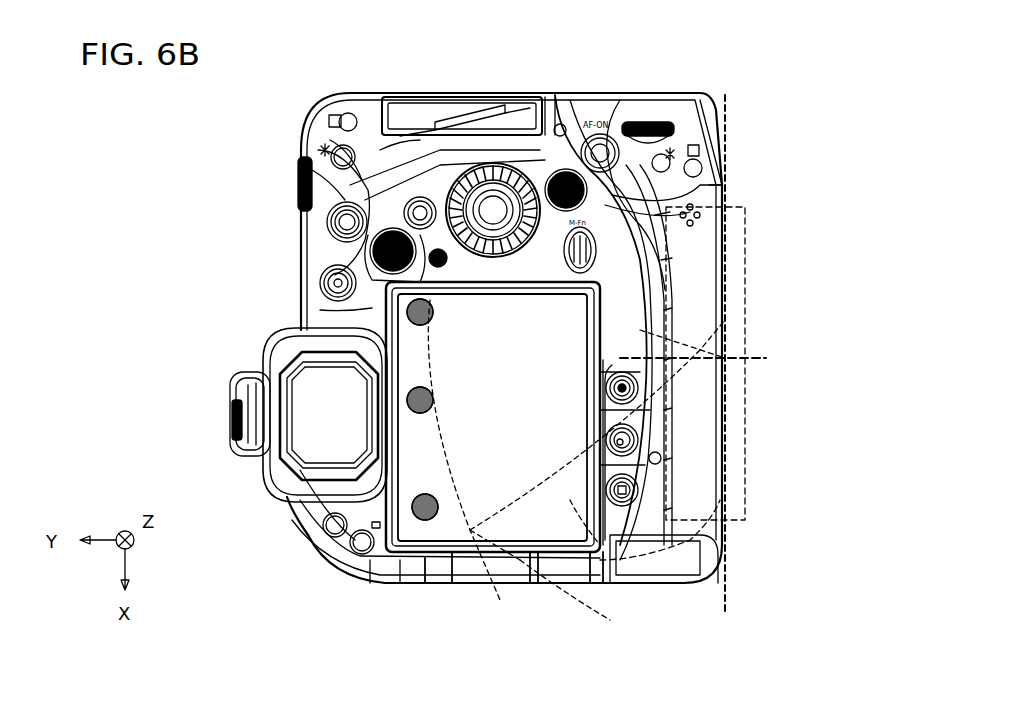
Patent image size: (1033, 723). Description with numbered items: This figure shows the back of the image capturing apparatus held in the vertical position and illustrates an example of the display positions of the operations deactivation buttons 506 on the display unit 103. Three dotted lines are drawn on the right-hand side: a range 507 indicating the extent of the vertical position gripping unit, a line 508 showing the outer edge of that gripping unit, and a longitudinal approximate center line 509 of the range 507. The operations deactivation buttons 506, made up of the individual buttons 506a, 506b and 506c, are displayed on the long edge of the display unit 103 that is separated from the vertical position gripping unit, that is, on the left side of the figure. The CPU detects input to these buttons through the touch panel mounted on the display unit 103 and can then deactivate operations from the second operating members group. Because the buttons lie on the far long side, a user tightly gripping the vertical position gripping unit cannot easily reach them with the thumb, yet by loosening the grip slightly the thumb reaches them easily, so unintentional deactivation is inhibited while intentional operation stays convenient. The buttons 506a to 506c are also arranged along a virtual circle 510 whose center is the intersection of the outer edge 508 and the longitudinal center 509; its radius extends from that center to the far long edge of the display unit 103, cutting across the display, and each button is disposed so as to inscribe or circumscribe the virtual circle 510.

The display unit 103 is at (525, 325).
The operations deactivation buttons 506 is at (130, 330).
The operations deactivation button 506a is at (405, 314).
The operations deactivation button 506b is at (405, 400).
The operations deactivation button 506c is at (410, 507).
The range of the vertical position gripping unit 507 is at (745, 207).
The line showing the outer edge of the vertical position gripping unit 508 is at (728, 122).
The longitudinal approximate center line 509 is at (740, 522).
The virtual circle 510 is at (580, 592).